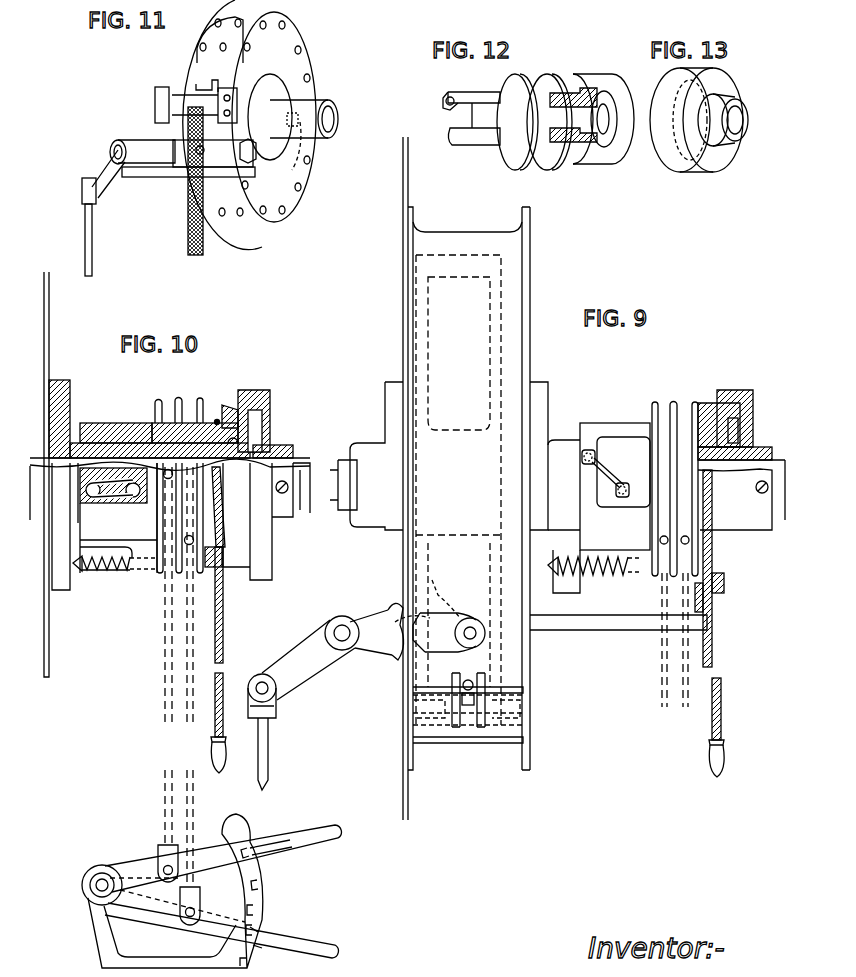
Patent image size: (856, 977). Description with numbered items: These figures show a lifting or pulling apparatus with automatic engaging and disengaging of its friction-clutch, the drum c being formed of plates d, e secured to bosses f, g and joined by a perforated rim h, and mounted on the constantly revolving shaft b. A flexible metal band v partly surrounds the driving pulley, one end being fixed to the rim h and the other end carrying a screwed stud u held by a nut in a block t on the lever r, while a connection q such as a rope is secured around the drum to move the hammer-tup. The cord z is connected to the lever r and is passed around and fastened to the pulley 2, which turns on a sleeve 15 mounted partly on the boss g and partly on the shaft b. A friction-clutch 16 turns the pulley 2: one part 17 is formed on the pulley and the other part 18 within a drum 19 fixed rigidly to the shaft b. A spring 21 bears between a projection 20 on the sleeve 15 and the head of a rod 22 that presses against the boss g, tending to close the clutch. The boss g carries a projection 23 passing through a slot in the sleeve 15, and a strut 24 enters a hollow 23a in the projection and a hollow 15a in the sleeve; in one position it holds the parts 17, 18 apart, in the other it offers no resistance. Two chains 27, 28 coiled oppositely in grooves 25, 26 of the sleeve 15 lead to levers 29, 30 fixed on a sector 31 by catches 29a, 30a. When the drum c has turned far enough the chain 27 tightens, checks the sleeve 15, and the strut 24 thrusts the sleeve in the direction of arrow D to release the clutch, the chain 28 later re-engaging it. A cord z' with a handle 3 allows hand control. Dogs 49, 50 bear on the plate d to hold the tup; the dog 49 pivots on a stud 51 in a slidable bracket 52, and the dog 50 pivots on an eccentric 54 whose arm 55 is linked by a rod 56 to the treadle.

In FIG. 12, the pulley 2 is at (565, 142).
In FIG. 10, the pulley 2 is at (212, 570).
In FIG. 9, the pulley 2 is at (720, 550).
In FIG. 10, the handle 3 is at (226, 755).
In FIG. 9, the handle 3 is at (724, 758).
In FIG. 12, the sleeve 15 is at (470, 145).
In FIG. 10, the sleeve 15 is at (118, 487).
In FIG. 9, the sleeve 15 is at (605, 510).
In FIG. 12, the hollow 15a is at (440, 110).
In FIG. 10, the friction-clutch 16 is at (228, 400).
In FIG. 9, the friction-clutch 16 is at (724, 402).
In FIG. 12, the part of friction-clutch 17 is at (608, 162).
In FIG. 10, the part of friction-clutch 17 is at (222, 405).
In FIG. 9, the part of friction-clutch 17 is at (712, 408).
In FIG. 13, the part of friction-clutch 18 is at (672, 168).
In FIG. 10, the part of friction-clutch 18 is at (262, 388).
In FIG. 9, the part of friction-clutch 18 is at (740, 388).
In FIG. 13, the drum 19 is at (728, 80).
In FIG. 10, the drum 19 is at (273, 423).
In FIG. 9, the drum 19 is at (753, 400).
In FIG. 10, the projection 20 is at (142, 575).
In FIG. 9, the projection 20 is at (636, 575).
In FIG. 10, the spring 21 is at (95, 575).
In FIG. 9, the spring 21 is at (602, 575).
In FIG. 10, the rod 22 is at (128, 580).
In FIG. 9, the rod 22 is at (558, 575).
In FIG. 11, the projection 23 is at (298, 120).
In FIG. 9, the projection 23 is at (616, 492).
In FIG. 11, the hollow 23a is at (292, 170).
In FIG. 10, the strut 24 is at (112, 503).
In FIG. 9, the strut 24 is at (608, 465).
In FIG. 12, the groove 25 is at (525, 72).
In FIG. 10, the groove 25 is at (160, 400).
In FIG. 9, the groove 25 is at (655, 400).
In FIG. 12, the groove 26 is at (557, 72).
In FIG. 10, the groove 26 is at (186, 398).
In FIG. 9, the groove 26 is at (676, 402).
In FIG. 10, the chain 27 is at (158, 718).
In FIG. 9, the chain 27 is at (650, 705).
In FIG. 10, the chain 28 is at (199, 677).
In FIG. 9, the chain 28 is at (687, 632).
In FIG. 10, the lever 29 is at (211, 865).
In FIG. 10, the catch 29a is at (268, 855).
In FIG. 10, the lever 30 is at (221, 922).
In FIG. 10, the catch 30a is at (258, 945).
In FIG. 10, the sector 31 is at (187, 891).
In FIG. 11, the dog 49 is at (185, 167).
In FIG. 9, the dog 49 is at (449, 632).
In FIG. 11, the dog 50 is at (150, 140).
In FIG. 9, the dog 50 is at (401, 631).
In FIG. 11, the stud 51 is at (210, 160).
In FIG. 9, the stud 51 is at (480, 612).
In FIG. 11, the bracket 52 is at (135, 177).
In FIG. 9, the eccentric 54 is at (335, 625).
In FIG. 11, the arm 55 is at (93, 174).
In FIG. 9, the arm 55 is at (320, 700).
In FIG. 11, the rod 56 is at (101, 240).
In FIG. 10, the shaft b is at (170, 477).
In FIG. 9, the shaft b is at (558, 483).
In FIG. 11, the drum c is at (267, 125).
In FIG. 10, the drum c is at (63, 349).
In FIG. 9, the drum c is at (395, 488).
In FIG. 11, the plate d is at (196, 94).
In FIG. 9, the plate d is at (402, 478).
In FIG. 10, the plate e is at (55, 474).
In FIG. 9, the plate e is at (534, 490).
In FIG. 9, the boss f is at (376, 456).
In FIG. 11, the boss g is at (318, 100).
In FIG. 10, the boss g is at (92, 605).
In FIG. 9, the boss g is at (555, 453).
In FIG. 11, the rim h is at (220, 40).
In FIG. 9, the rim h is at (467, 468).
In FIG. 11, the connection q is at (186, 186).
In FIG. 11, the lever r is at (196, 92).
In FIG. 9, the lever r is at (618, 622).
In FIG. 9, the block t is at (450, 700).
In FIG. 9, the screwed stud u is at (468, 705).
In FIG. 9, the flexible metal band v is at (497, 722).
In FIG. 9, the cord z is at (726, 597).
In FIG. 10, the cord z' is at (226, 602).
In FIG. 9, the cord z' is at (728, 671).
In FIG. 10, the arrow D is at (140, 397).
In FIG. 9, the arrow D is at (622, 397).